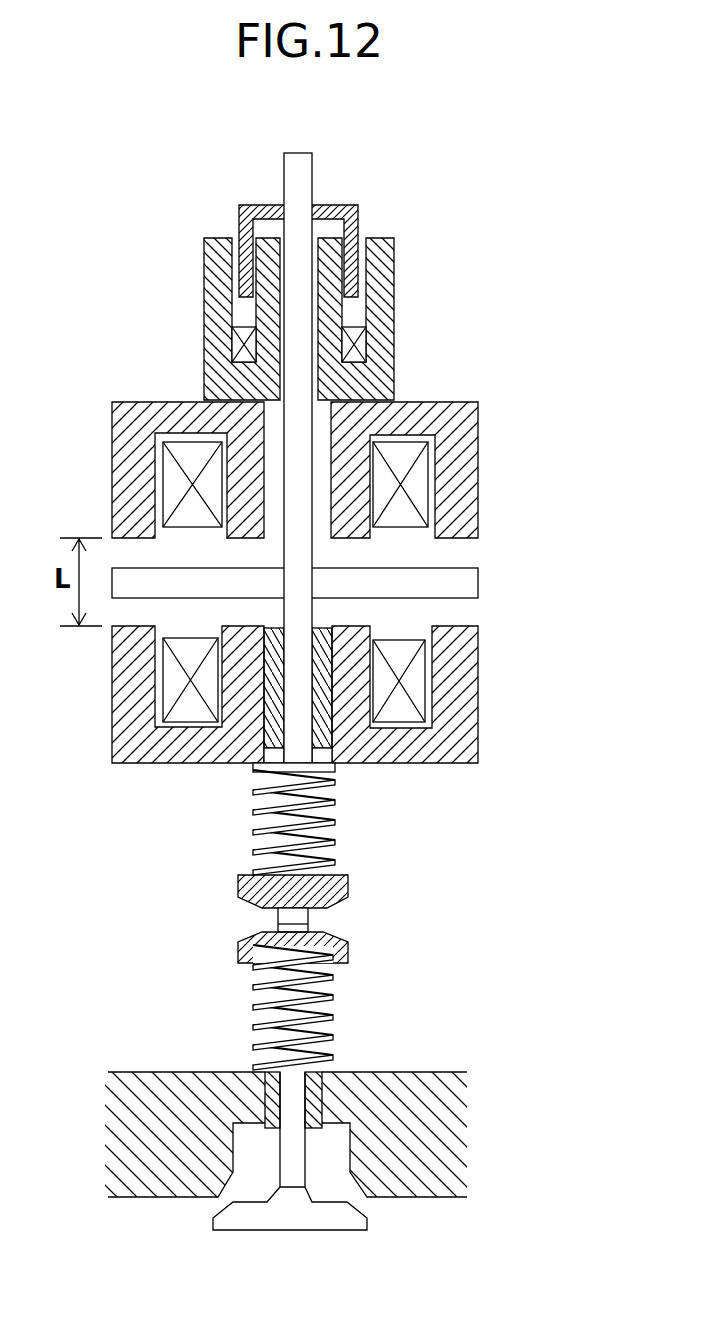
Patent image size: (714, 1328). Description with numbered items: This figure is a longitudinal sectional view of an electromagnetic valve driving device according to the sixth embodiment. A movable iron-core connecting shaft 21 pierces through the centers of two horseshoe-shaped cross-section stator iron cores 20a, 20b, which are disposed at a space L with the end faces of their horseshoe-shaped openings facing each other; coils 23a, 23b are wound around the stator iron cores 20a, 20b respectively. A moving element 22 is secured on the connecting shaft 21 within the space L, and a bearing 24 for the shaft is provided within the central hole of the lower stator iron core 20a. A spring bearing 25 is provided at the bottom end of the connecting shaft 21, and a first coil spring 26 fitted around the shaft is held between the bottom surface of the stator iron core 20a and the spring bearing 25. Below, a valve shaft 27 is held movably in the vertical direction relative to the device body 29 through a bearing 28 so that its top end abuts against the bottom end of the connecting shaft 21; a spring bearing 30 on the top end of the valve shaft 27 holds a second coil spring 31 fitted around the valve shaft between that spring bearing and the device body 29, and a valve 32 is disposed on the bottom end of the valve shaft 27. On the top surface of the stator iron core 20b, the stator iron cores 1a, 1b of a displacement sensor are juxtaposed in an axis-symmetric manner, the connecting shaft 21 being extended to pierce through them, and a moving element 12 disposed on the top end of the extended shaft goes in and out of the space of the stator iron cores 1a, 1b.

The stator iron core of the displacement sensor 1a is at (205, 298).
The stator iron core of the displacement sensor 1b is at (386, 298).
The moving element 12 is at (259, 205).
The stator iron core 20a is at (112, 680).
The stator iron core 20b is at (112, 462).
The movable iron-core connecting shaft 21 is at (300, 378).
The moving element 22 is at (524, 614).
The coil 23a is at (415, 680).
The coil 23b is at (415, 480).
The bearing 24 is at (320, 742).
The spring bearing 25 is at (348, 886).
The first coil spring 26 is at (253, 802).
The valve shaft 27 is at (295, 1108).
The bearing 28 is at (268, 1105).
The device body 29 is at (462, 1120).
The spring bearing 30 is at (348, 950).
The second coil spring 31 is at (253, 1000).
The valve 32 is at (292, 1222).